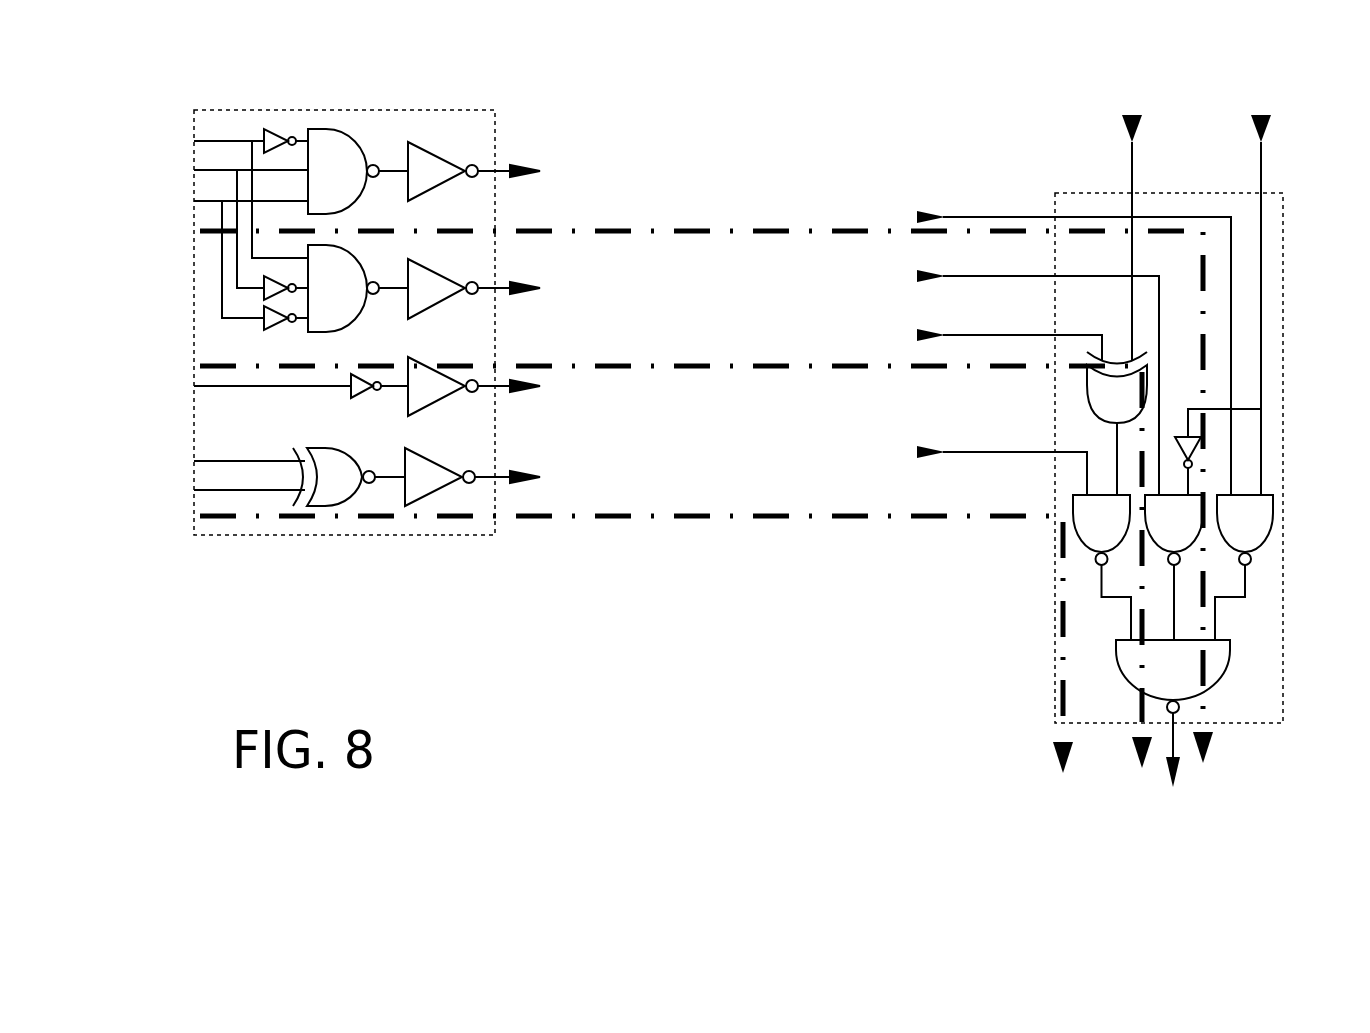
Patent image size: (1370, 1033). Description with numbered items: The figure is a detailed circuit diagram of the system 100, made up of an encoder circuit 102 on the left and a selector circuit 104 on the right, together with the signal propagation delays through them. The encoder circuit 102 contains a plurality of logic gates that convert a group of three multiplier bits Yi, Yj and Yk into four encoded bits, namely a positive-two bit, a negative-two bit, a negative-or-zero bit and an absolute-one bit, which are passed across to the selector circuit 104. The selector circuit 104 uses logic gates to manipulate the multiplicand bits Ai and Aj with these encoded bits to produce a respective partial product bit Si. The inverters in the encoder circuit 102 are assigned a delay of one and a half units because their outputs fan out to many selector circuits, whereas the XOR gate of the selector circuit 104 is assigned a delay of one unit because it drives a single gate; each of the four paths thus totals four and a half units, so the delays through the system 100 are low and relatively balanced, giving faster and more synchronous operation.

The system 100 is at (730, 43).
The encoder circuit 102 is at (392, 304).
The selector circuit 104 is at (1088, 460).